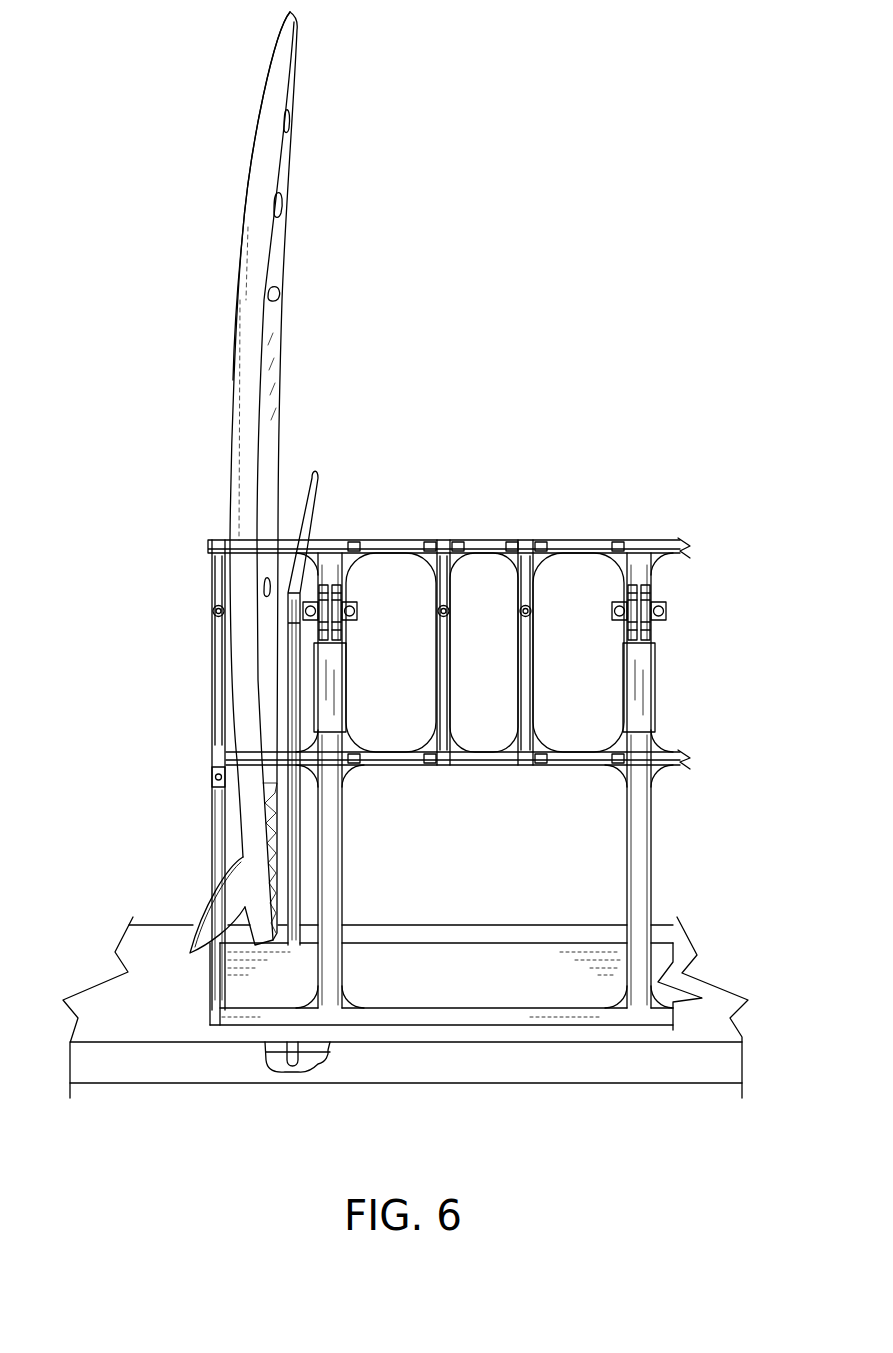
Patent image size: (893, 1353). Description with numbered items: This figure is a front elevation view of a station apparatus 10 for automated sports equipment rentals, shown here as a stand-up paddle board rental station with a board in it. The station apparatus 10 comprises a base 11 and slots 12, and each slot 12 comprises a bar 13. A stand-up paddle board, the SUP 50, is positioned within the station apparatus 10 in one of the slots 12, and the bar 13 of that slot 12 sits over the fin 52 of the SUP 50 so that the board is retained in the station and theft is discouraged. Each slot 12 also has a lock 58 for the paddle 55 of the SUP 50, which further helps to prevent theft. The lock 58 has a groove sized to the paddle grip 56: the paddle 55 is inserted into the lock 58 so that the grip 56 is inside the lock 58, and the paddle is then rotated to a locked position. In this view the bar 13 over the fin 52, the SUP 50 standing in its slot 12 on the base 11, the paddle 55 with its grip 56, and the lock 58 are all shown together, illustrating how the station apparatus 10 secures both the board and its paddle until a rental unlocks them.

The station apparatus 10 is at (715, 607).
The base 11 is at (220, 972).
The slot 12 is at (292, 457).
The bar 13 is at (212, 703).
The stand-up paddle board 50 is at (233, 312).
The fin 52 is at (200, 907).
The paddle 55 is at (313, 497).
The paddle grip 56 is at (290, 1068).
The lock 58 is at (310, 1058).